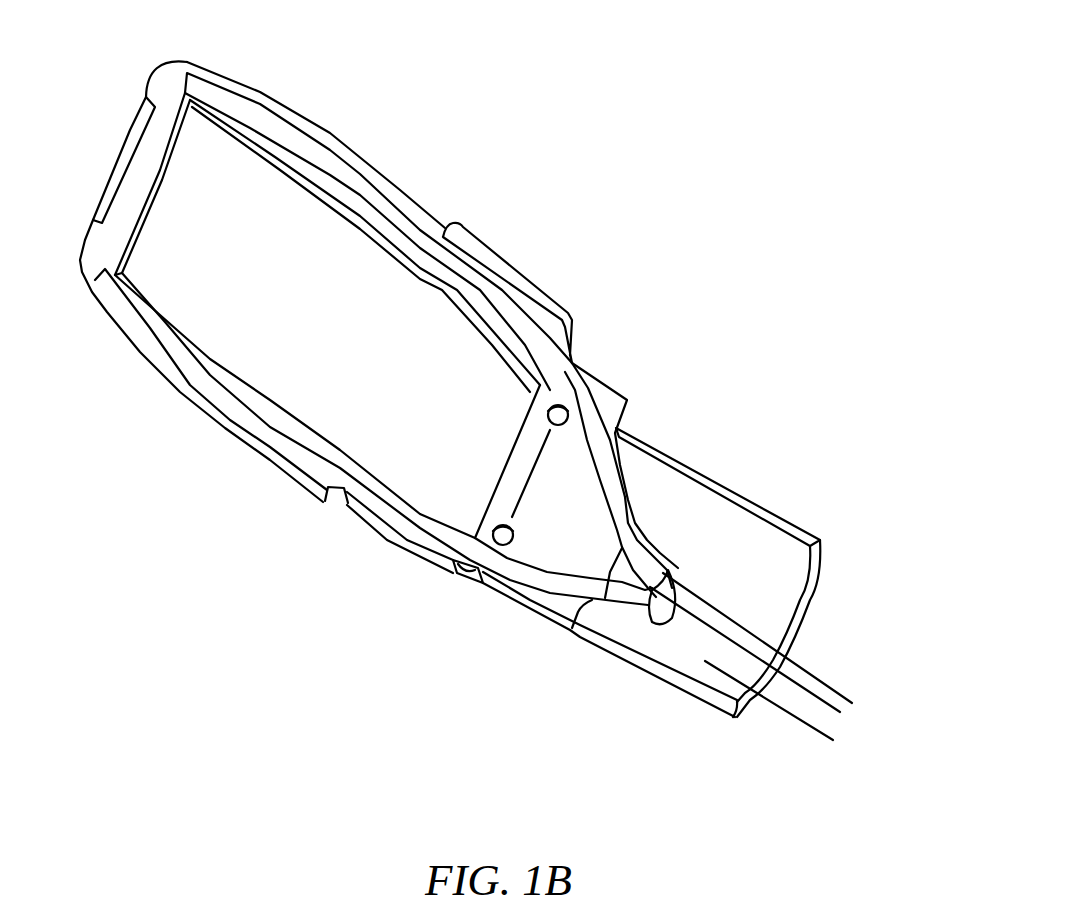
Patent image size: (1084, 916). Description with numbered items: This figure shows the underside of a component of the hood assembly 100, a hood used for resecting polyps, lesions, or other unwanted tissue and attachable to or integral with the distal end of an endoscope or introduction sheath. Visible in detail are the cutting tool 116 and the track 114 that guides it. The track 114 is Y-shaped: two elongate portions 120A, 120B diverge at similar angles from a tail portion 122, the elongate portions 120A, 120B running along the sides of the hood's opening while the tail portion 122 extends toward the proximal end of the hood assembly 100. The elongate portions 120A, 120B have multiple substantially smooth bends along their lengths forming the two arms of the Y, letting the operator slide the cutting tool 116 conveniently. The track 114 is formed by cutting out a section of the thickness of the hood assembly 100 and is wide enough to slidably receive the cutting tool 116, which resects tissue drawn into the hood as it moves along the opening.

The hood assembly 100 is at (562, 165).
The track 114 is at (455, 280).
The cutting tool 116 is at (268, 125).
The elongate portion 120A is at (543, 364).
The elongate portion 120B is at (453, 535).
The tail portion 122 is at (760, 633).